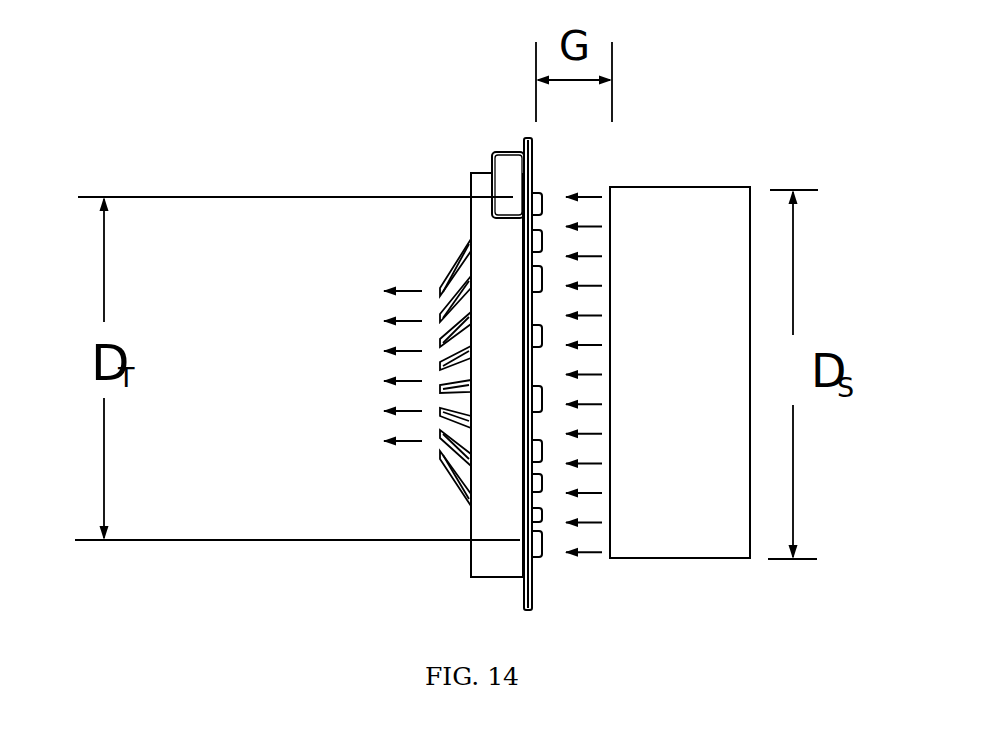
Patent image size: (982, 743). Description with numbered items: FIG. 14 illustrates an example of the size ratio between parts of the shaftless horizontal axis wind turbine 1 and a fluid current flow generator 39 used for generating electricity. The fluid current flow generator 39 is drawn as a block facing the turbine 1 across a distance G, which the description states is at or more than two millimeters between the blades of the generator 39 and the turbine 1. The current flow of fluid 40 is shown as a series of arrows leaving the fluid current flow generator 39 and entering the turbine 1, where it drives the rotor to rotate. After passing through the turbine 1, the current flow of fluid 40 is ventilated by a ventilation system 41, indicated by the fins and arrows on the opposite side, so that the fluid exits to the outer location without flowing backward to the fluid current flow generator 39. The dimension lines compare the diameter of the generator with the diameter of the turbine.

The cooling device 1 is at (482, 185).
The fluid current flow generator 39 is at (720, 215).
The current flow of fluid 40 is at (590, 193).
The ventilation system 41 is at (400, 380).